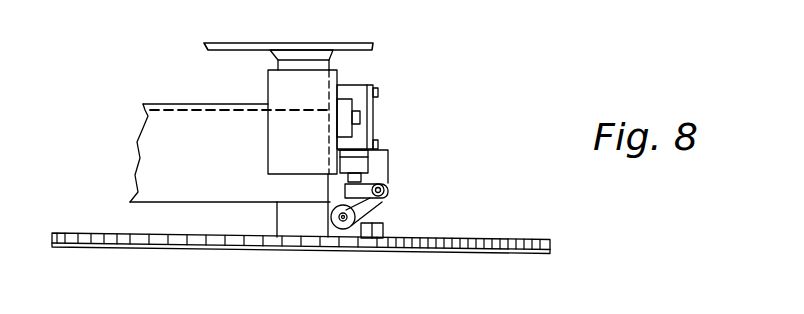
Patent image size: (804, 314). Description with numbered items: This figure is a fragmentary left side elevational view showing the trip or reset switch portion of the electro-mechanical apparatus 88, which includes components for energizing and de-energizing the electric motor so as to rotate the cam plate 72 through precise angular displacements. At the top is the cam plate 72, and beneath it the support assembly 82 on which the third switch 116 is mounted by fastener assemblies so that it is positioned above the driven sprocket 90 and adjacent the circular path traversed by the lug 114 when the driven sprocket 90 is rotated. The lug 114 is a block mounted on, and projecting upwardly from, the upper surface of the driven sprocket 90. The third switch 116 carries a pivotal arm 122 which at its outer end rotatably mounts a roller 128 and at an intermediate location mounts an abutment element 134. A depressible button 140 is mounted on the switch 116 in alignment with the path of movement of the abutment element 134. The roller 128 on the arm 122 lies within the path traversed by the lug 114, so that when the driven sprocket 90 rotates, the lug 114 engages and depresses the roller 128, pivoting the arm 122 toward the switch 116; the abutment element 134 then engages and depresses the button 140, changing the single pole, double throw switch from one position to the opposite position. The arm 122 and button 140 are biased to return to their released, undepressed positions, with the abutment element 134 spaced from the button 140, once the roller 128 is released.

The cam plate 72 is at (346, 42).
The support assembly 82 is at (334, 65).
The electro-mechanical apparatus 88 is at (447, 78).
The third switch 116 is at (380, 119).
The depressible button 140 is at (367, 178).
The abutment element 134 is at (347, 194).
The pivotal arm 122 is at (385, 203).
The roller 128 is at (341, 233).
The lug 114 is at (385, 228).
The driven sprocket 90 is at (523, 253).